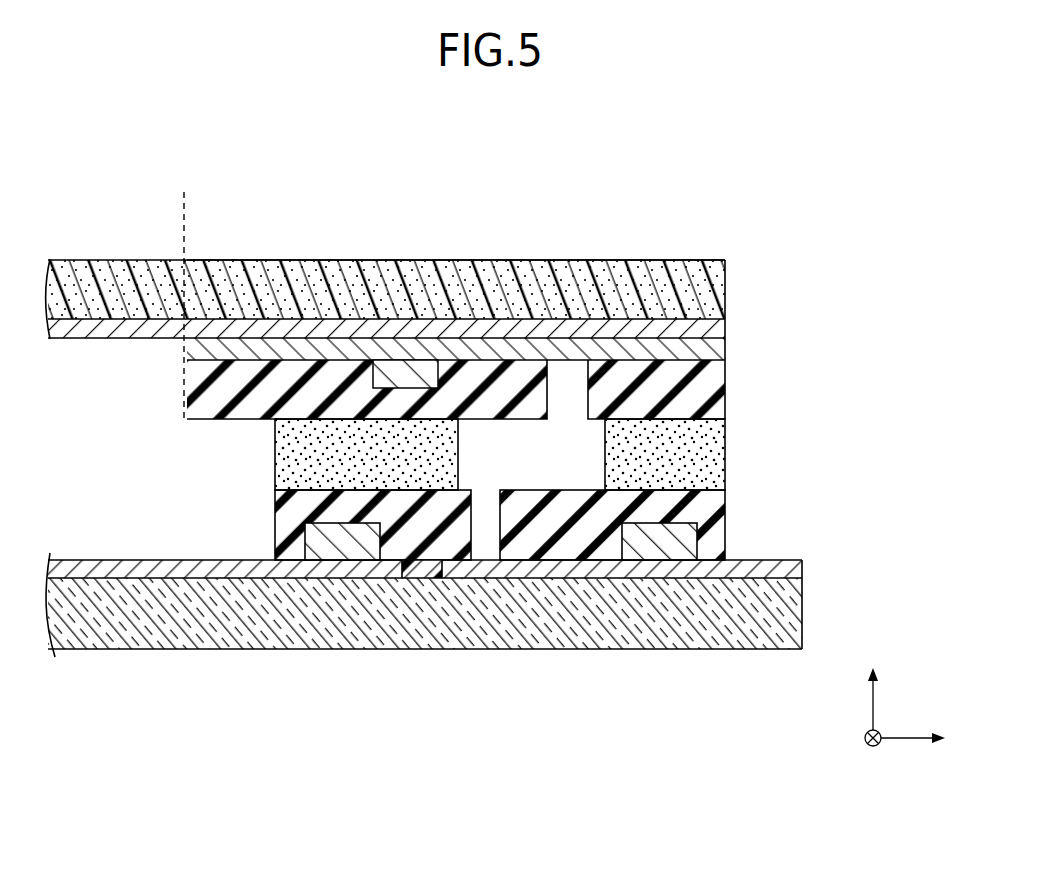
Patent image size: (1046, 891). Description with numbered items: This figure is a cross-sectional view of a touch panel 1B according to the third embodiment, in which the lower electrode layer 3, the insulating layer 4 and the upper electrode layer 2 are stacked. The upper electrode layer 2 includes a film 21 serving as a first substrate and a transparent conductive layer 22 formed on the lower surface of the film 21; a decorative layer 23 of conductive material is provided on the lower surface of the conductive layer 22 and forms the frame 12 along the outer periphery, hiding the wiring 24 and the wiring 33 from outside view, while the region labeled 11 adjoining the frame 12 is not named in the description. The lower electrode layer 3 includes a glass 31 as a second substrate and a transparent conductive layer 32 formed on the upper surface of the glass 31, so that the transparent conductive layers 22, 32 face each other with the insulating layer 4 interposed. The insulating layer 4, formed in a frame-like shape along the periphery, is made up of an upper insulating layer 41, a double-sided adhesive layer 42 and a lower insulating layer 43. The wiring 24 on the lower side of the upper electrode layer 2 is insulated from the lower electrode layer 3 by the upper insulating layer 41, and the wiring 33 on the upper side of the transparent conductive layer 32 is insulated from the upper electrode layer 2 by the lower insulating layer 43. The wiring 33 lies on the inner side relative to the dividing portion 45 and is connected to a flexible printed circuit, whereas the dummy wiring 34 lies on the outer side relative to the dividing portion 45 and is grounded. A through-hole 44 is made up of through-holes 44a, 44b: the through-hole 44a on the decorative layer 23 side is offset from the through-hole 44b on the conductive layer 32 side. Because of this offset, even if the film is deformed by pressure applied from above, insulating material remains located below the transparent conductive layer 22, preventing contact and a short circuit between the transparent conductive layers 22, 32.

The touch panel 1B is at (828, 190).
The terminal region 11 is at (112, 248).
The frame 12 is at (445, 248).
The upper electrode layer 2 is at (453, 347).
The film 21 is at (725, 272).
The transparent conductive layer 22 is at (725, 321).
The decorative layer 23 is at (725, 344).
The wiring 24 is at (405, 373).
The insulating layer 4 is at (567, 553).
The upper insulating layer 41 is at (713, 388).
The double-sided adhesive layer 42 is at (712, 458).
The lower insulating layer 43 is at (710, 506).
The through-hole 44 is at (521, 456).
The through-hole 44a is at (568, 373).
The through-hole 44b is at (484, 533).
The dividing portion 45 is at (420, 579).
The lower electrode layer 3 is at (486, 567).
The glass 31 is at (468, 605).
The transparent conductive layer 32 is at (797, 564).
The wiring 33 is at (343, 540).
The dummy wiring 34 is at (673, 540).